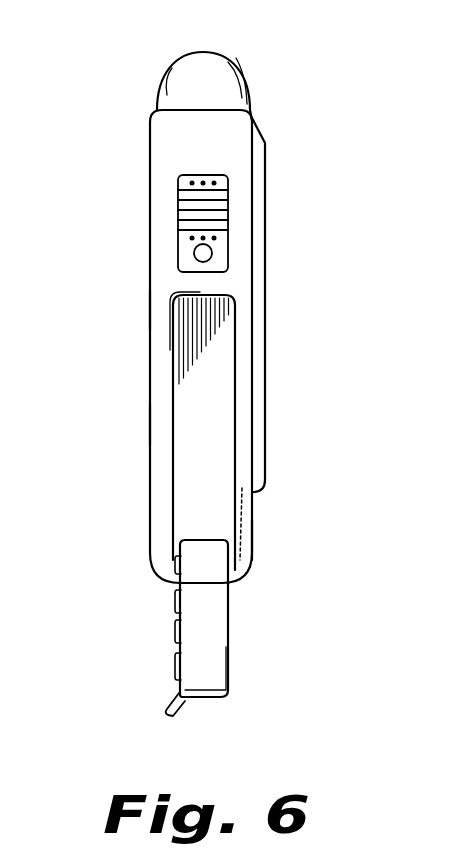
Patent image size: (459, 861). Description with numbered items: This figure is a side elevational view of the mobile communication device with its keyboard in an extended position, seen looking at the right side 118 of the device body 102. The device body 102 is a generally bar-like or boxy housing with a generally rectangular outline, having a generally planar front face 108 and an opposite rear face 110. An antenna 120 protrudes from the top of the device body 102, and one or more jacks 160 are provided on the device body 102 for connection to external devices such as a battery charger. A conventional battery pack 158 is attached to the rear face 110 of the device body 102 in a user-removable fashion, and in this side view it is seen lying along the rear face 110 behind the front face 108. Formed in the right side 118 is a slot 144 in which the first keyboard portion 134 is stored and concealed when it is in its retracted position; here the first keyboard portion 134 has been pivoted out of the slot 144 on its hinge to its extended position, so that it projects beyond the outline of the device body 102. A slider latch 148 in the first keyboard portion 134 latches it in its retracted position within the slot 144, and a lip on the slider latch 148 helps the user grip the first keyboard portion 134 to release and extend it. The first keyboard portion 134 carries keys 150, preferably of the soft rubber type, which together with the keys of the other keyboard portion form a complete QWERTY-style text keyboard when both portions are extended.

The device body 102 is at (151, 161).
The antenna 120 is at (243, 78).
The jacks 160 is at (229, 206).
The front face 108 is at (150, 311).
The battery pack 158 is at (266, 370).
The right side 118 is at (153, 424).
The slot 144 is at (186, 472).
The rear face 110 is at (262, 543).
The first keyboard portion 134 is at (232, 648).
The slider latch 148 is at (181, 704).
The keys 150 is at (175, 664).